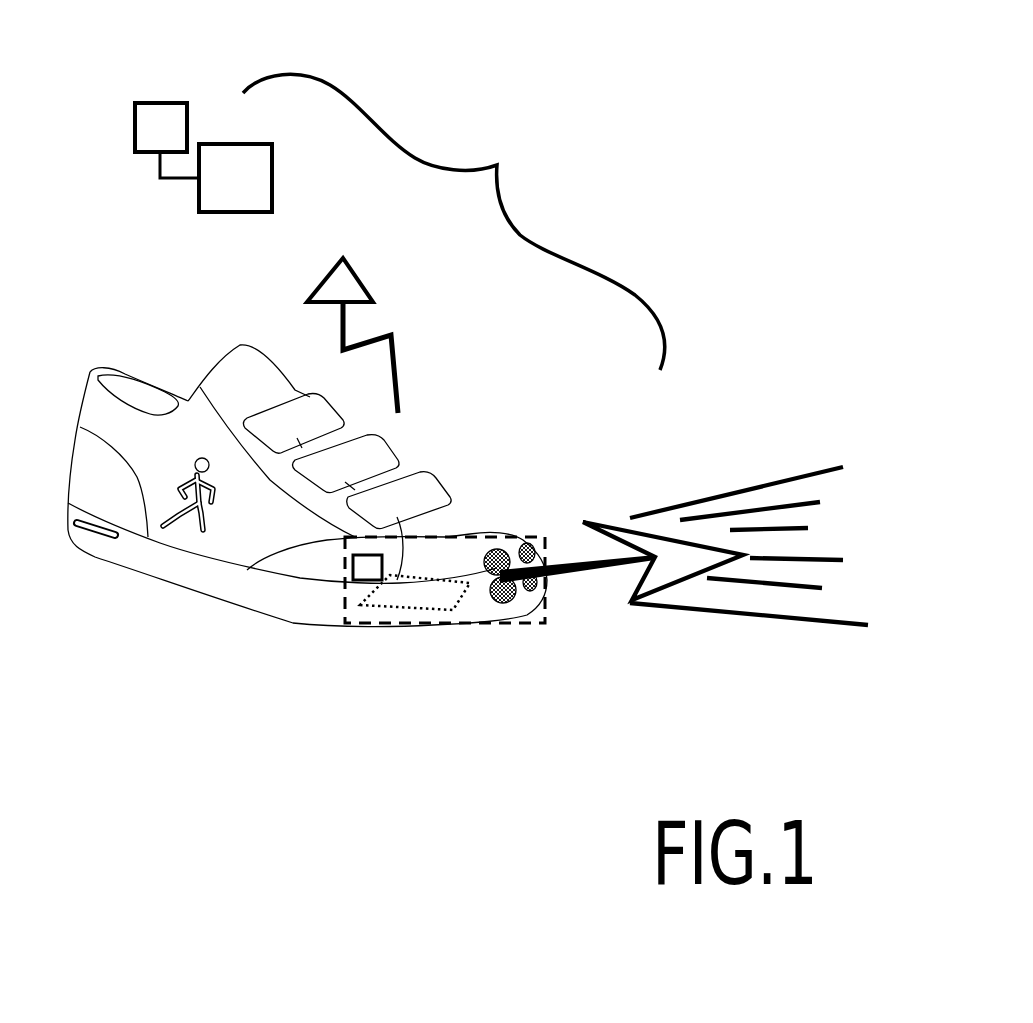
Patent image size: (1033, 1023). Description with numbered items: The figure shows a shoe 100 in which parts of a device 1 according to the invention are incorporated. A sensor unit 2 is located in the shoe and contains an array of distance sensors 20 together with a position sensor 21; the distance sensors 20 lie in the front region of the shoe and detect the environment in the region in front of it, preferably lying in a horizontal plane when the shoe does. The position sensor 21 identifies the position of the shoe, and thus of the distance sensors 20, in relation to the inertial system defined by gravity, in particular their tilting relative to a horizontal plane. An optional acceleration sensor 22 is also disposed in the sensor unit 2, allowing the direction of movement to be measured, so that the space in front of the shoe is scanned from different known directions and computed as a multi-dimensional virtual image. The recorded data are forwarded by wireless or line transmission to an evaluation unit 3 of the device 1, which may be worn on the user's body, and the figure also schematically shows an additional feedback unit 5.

The device 1 is at (454, 222).
The evaluation unit 3 is at (247, 167).
The feedback unit 5 is at (167, 124).
The shoe 100 is at (193, 630).
The sensor unit 2 is at (330, 573).
The distance sensors 20 is at (533, 553).
The position sensor 21 is at (437, 597).
The acceleration sensor 22 is at (357, 580).